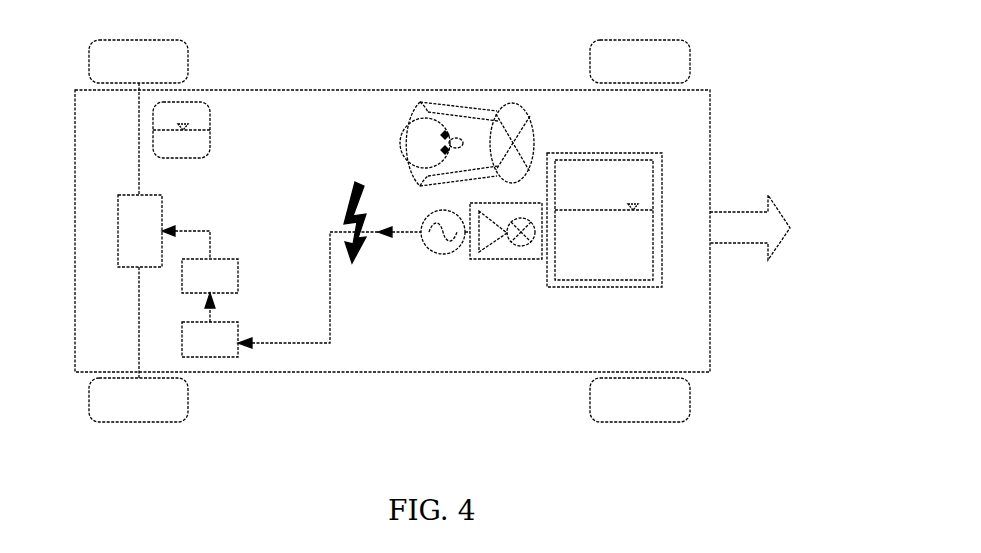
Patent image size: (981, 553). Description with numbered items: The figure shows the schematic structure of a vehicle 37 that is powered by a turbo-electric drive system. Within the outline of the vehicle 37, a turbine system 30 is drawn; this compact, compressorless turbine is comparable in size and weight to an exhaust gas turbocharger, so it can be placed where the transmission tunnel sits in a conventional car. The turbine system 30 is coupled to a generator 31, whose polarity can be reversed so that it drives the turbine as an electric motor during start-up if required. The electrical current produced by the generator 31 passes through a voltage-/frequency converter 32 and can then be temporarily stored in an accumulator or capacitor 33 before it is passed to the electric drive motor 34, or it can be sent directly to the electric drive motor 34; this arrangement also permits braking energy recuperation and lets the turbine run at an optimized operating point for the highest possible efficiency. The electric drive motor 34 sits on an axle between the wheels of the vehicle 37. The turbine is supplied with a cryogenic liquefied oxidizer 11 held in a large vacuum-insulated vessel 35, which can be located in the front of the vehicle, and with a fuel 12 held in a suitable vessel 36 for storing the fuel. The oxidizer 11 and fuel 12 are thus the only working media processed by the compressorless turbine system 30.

The oxidizer 11 is at (640, 238).
The fuel 12 is at (188, 142).
The turbine system 30 is at (500, 259).
The generator 31 is at (438, 254).
The voltage-/frequency converter 32 is at (238, 333).
The accumulator or capacitor 33 is at (238, 277).
The electric drive motor 34 is at (128, 267).
The vessel for oxidizer 35 is at (602, 287).
The vessel for fuel 36 is at (180, 158).
The vehicle 37 is at (710, 135).